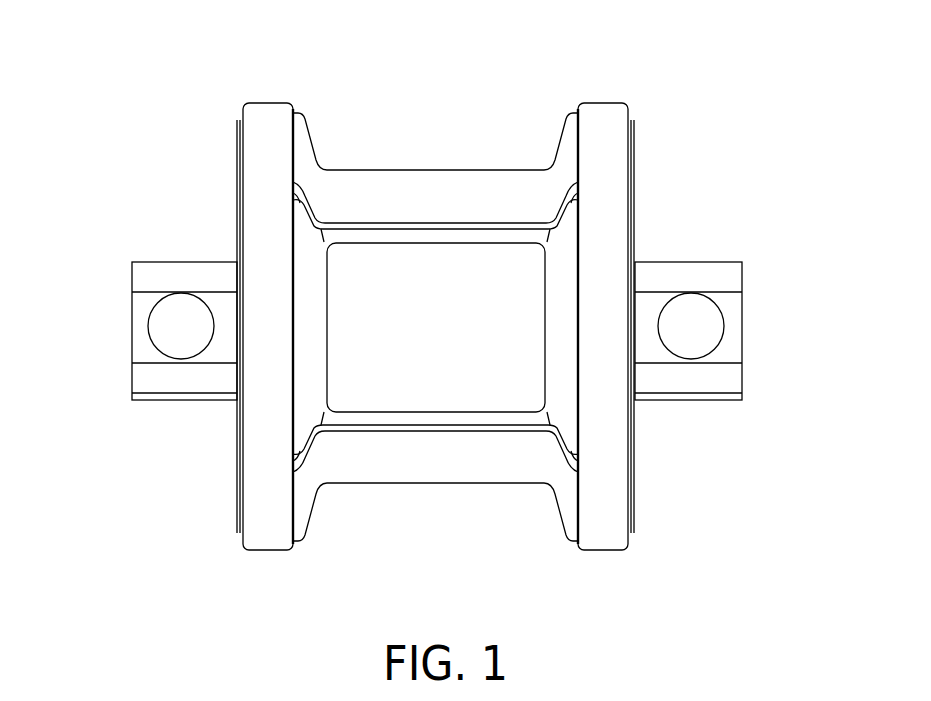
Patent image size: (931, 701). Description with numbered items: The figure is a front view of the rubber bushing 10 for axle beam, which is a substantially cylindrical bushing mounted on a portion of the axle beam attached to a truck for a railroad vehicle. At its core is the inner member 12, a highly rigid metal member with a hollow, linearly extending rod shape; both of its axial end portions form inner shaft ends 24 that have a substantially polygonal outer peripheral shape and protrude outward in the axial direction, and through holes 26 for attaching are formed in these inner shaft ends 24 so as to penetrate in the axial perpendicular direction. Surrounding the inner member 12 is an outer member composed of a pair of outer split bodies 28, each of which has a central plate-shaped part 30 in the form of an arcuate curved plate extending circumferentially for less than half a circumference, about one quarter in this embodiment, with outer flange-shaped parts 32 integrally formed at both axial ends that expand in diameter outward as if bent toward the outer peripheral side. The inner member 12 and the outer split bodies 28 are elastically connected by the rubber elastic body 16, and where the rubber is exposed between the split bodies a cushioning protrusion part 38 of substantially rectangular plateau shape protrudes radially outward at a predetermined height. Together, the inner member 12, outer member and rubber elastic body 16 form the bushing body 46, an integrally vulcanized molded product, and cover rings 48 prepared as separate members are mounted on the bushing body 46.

The rubber bushing for axle beam 10 is at (594, 66).
The inner member 12 is at (691, 259).
The rubber elastic body 16 is at (483, 377).
The inner shaft end 24 is at (165, 375).
The through hole 26 is at (163, 311).
The outer split body 28 is at (442, 278).
The central plate-shaped part 30 is at (435, 277).
The outer flange-shaped part 32 is at (565, 148).
The cushioning protrusion part 38 is at (435, 373).
The bushing body 46 is at (402, 156).
The cover ring 48 is at (269, 120).